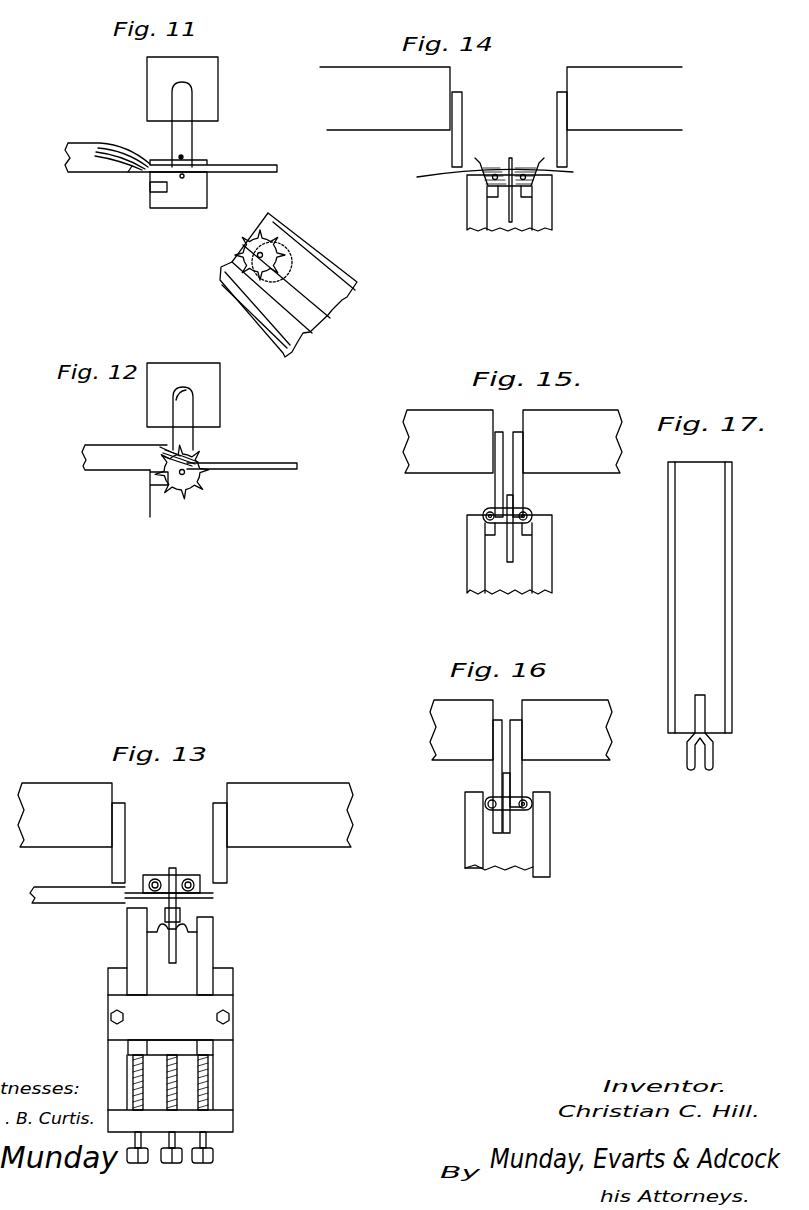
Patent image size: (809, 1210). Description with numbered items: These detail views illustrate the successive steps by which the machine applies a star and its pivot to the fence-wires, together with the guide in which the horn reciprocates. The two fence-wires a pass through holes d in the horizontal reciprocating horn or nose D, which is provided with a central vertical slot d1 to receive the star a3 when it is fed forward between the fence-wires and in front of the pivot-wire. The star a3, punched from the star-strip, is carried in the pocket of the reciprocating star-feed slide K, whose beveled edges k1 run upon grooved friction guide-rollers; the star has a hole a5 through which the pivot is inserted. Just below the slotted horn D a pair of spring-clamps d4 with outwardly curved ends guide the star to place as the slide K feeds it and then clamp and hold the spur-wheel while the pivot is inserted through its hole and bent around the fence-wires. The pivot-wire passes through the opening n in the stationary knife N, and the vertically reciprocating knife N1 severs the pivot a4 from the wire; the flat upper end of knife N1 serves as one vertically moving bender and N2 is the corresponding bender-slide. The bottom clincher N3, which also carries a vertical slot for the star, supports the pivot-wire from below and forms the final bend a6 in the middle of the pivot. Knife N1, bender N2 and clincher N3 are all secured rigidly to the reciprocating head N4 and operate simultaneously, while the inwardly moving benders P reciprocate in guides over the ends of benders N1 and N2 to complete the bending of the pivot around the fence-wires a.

In FIG. 11, the horizontally moving bender P is at (208, 78).
In FIG. 12, the horizontally moving bender P is at (208, 405).
In FIG. 13, the horizontally moving bender P is at (185, 833).
In FIG. 14, the horizontally moving bender P is at (501, 117).
In FIG. 15, the horizontally moving bender P is at (512, 463).
In FIG. 16, the horizontally moving bender P is at (521, 766).
In FIG. 11, the reciprocating horn D is at (107, 157).
In FIG. 12, the reciprocating horn D is at (140, 457).
In FIG. 13, the reciprocating horn D is at (147, 875).
In FIG. 14, the reciprocating horn D is at (476, 175).
In FIG. 15, the reciprocating horn D is at (525, 527).
In FIG. 17, the reciprocating horn D is at (700, 597).
In FIG. 11, the hole d is at (133, 173).
In FIG. 12, the hole d is at (203, 464).
In FIG. 13, the hole d is at (190, 880).
In FIG. 14, the hole d is at (577, 240).
In FIG. 15, the hole d is at (575, 518).
In FIG. 13, the central vertical slot d1 is at (177, 874).
In FIG. 14, the central vertical slot d1 is at (515, 163).
In FIG. 11, the spring-clamp d4 is at (158, 188).
In FIG. 12, the spring-clamp d4 is at (160, 483).
In FIG. 13, the spring-clamp d4 is at (165, 913).
In FIG. 17, the spring-clamp d4 is at (732, 767).
In FIG. 11, the fence-wire a is at (240, 166).
In FIG. 12, the fence-wire a is at (282, 468).
In FIG. 16, the fence-wire a is at (492, 803).
In FIG. 11, the star a3 is at (263, 256).
In FIG. 12, the star a3 is at (182, 472).
In FIG. 13, the star a3 is at (172, 868).
In FIG. 14, the star a3 is at (545, 170).
In FIG. 15, the star a3 is at (508, 540).
In FIG. 16, the star a3 is at (505, 813).
In FIG. 12, the pivot a4 is at (193, 474).
In FIG. 13, the pivot a4 is at (200, 895).
In FIG. 14, the pivot a4 is at (498, 148).
In FIG. 16, the pivot a4 is at (522, 812).
In FIG. 11, the hole in the star a5 is at (258, 256).
In FIG. 16, the final bend a6 is at (515, 800).
In FIG. 11, the stationary knife N is at (178, 190).
In FIG. 13, the stationary knife N is at (60, 895).
In FIG. 13, the vertically-reciprocating knife N1 is at (133, 942).
In FIG. 14, the vertically-reciprocating knife N1 is at (465, 198).
In FIG. 15, the vertically-reciprocating knife N1 is at (478, 575).
In FIG. 16, the vertically-reciprocating knife N1 is at (470, 795).
In FIG. 13, the bender-slide N2 is at (207, 945).
In FIG. 14, the bender-slide N2 is at (558, 198).
In FIG. 15, the bender-slide N2 is at (545, 582).
In FIG. 16, the bender-slide N2 is at (543, 845).
In FIG. 13, the bottom clincher N3 is at (147, 988).
In FIG. 14, the bottom clincher N3 is at (524, 220).
In FIG. 15, the bottom clincher N3 is at (497, 575).
In FIG. 16, the bottom clincher N3 is at (515, 865).
In FIG. 13, the reciprocating head N4 is at (225, 1065).
In FIG. 13, the opening n is at (172, 953).
In FIG. 14, the opening n is at (507, 220).
In FIG. 15, the opening n is at (510, 556).
In FIG. 16, the opening n is at (503, 833).
In FIG. 11, the star-feed slide K is at (290, 316).
In FIG. 11, the beveled edge k1 is at (235, 298).